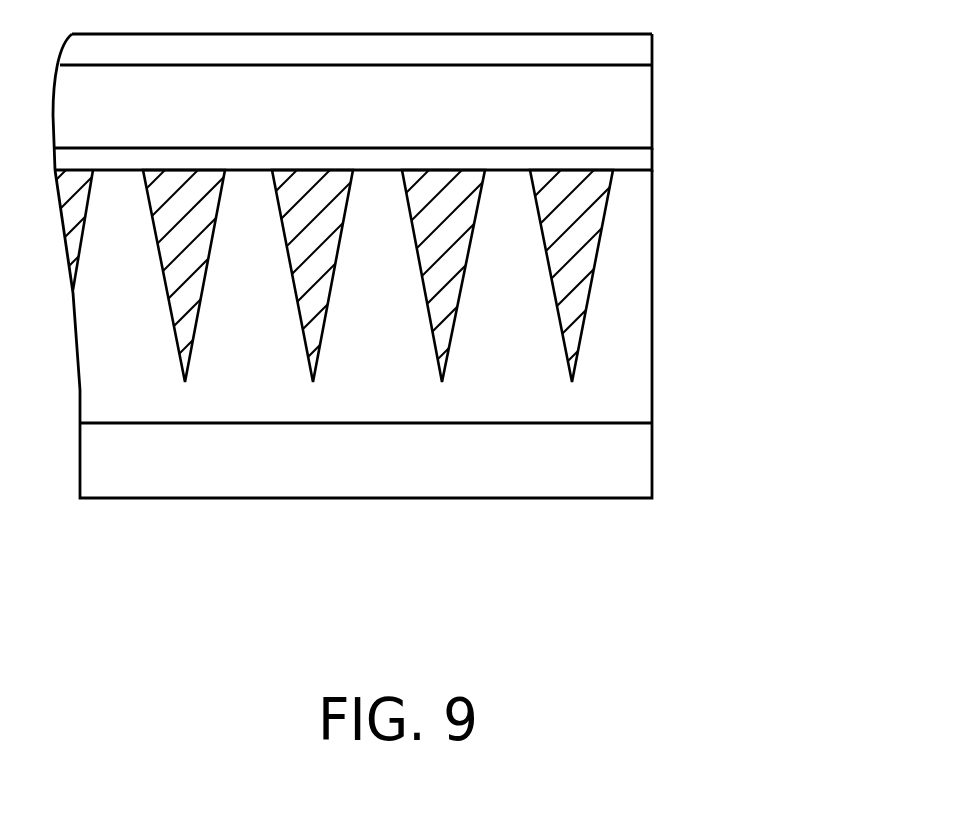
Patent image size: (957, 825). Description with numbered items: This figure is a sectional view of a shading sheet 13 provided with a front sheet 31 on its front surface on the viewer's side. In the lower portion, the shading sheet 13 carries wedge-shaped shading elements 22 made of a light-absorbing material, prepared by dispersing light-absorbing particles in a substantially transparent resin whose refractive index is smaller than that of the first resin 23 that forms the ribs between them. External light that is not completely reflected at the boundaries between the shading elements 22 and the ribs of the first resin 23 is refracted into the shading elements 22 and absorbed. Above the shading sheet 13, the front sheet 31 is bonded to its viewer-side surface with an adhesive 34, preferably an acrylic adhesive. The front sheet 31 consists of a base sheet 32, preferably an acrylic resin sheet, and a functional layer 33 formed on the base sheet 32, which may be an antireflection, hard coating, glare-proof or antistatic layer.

The shading sheet 13 is at (686, 175).
The shading elements 22 is at (441, 322).
The first resin 23 is at (515, 370).
The front sheet 31 is at (763, 20).
The base sheet 32 is at (640, 101).
The functional layer 33 is at (640, 51).
The adhesive 34 is at (640, 161).